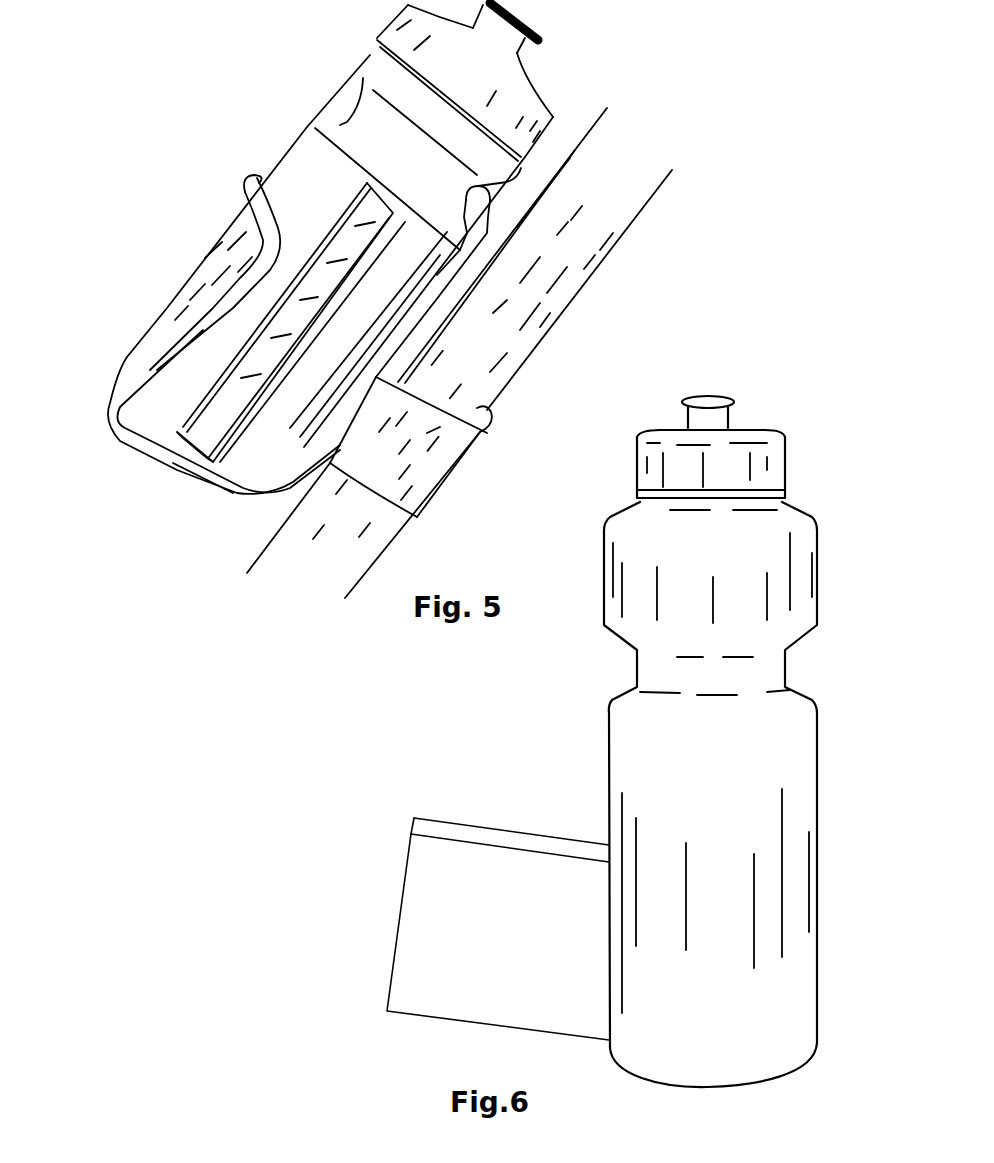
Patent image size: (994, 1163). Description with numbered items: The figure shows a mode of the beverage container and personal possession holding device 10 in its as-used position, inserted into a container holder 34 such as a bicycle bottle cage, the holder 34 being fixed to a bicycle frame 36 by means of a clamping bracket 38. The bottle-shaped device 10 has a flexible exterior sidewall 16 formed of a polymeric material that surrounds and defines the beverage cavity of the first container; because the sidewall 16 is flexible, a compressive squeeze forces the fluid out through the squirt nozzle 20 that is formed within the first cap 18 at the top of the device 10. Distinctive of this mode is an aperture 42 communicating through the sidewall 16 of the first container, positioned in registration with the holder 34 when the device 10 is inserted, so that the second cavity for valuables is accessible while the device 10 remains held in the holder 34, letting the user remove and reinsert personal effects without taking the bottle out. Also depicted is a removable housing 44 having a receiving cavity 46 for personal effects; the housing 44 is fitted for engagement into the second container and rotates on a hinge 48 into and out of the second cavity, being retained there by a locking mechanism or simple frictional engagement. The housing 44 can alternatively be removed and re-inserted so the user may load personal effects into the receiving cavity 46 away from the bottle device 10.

In FIG. 5, the beverage container and personal possession holding device 10 is at (140, 308).
In FIG. 5, the flexible exterior sidewall 16 is at (322, 173).
In FIG. 5, the first cap 18 is at (430, 64).
In FIG. 6, the first cap 18 is at (775, 442).
In FIG. 5, the squirt nozzle 20 is at (520, 15).
In FIG. 5, the container holder 34 is at (247, 190).
In FIG. 5, the bicycle frame 36 is at (620, 210).
In FIG. 5, the clamping bracket 38 is at (456, 437).
In FIG. 5, the aperture 42 is at (190, 420).
In FIG. 5, the removable housing 44 is at (208, 427).
In FIG. 6, the removable housing 44 is at (441, 912).
In FIG. 6, the receiving cavity 46 is at (450, 830).
In FIG. 5, the hinge 48 is at (190, 447).